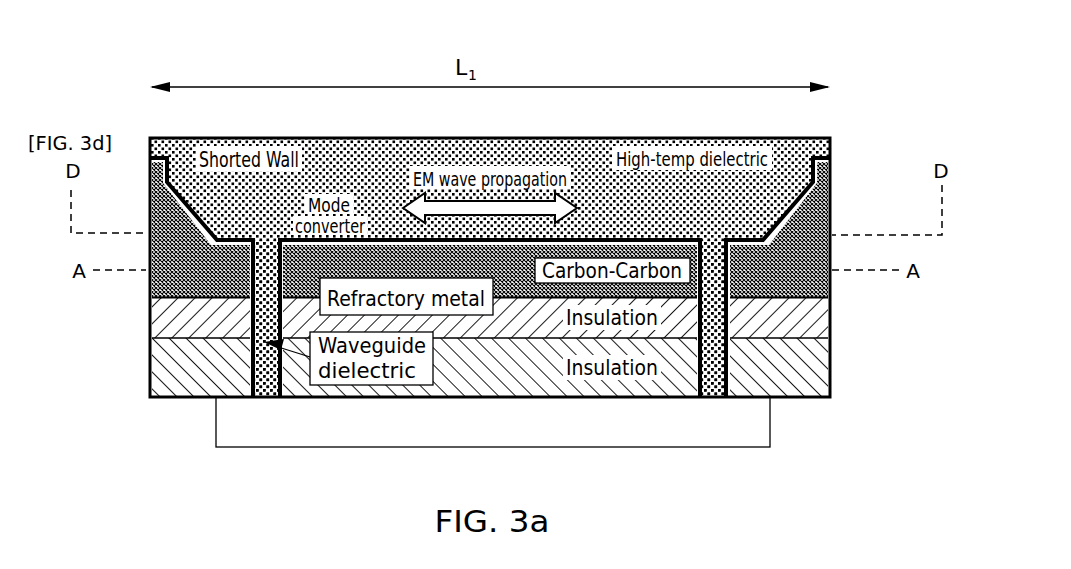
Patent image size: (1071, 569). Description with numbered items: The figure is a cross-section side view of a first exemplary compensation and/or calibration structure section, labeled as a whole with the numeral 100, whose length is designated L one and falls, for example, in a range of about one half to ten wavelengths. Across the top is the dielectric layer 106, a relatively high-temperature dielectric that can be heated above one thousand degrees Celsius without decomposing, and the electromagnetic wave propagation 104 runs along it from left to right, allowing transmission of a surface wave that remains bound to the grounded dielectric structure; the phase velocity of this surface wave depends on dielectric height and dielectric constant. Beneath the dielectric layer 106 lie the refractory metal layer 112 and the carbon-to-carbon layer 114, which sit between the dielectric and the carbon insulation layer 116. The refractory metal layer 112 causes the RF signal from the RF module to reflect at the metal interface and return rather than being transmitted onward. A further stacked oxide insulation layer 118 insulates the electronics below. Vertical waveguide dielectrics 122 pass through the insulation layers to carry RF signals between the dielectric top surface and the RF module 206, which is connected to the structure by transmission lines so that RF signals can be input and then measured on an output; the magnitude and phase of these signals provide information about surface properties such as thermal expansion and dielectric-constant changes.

The antenna assembly 100 is at (835, 65).
The electromagnetic wave propagation 104 is at (428, 157).
The dielectric layer 106 is at (822, 149).
The refractory metal layer 112 is at (832, 160).
The carbon-to-carbon layer 114 is at (832, 248).
The carbon insulation layer 116 is at (832, 315).
The oxide insulation layer 118 is at (832, 365).
The waveguide dielectric 122 is at (335, 397).
The RF module 206 is at (772, 422).